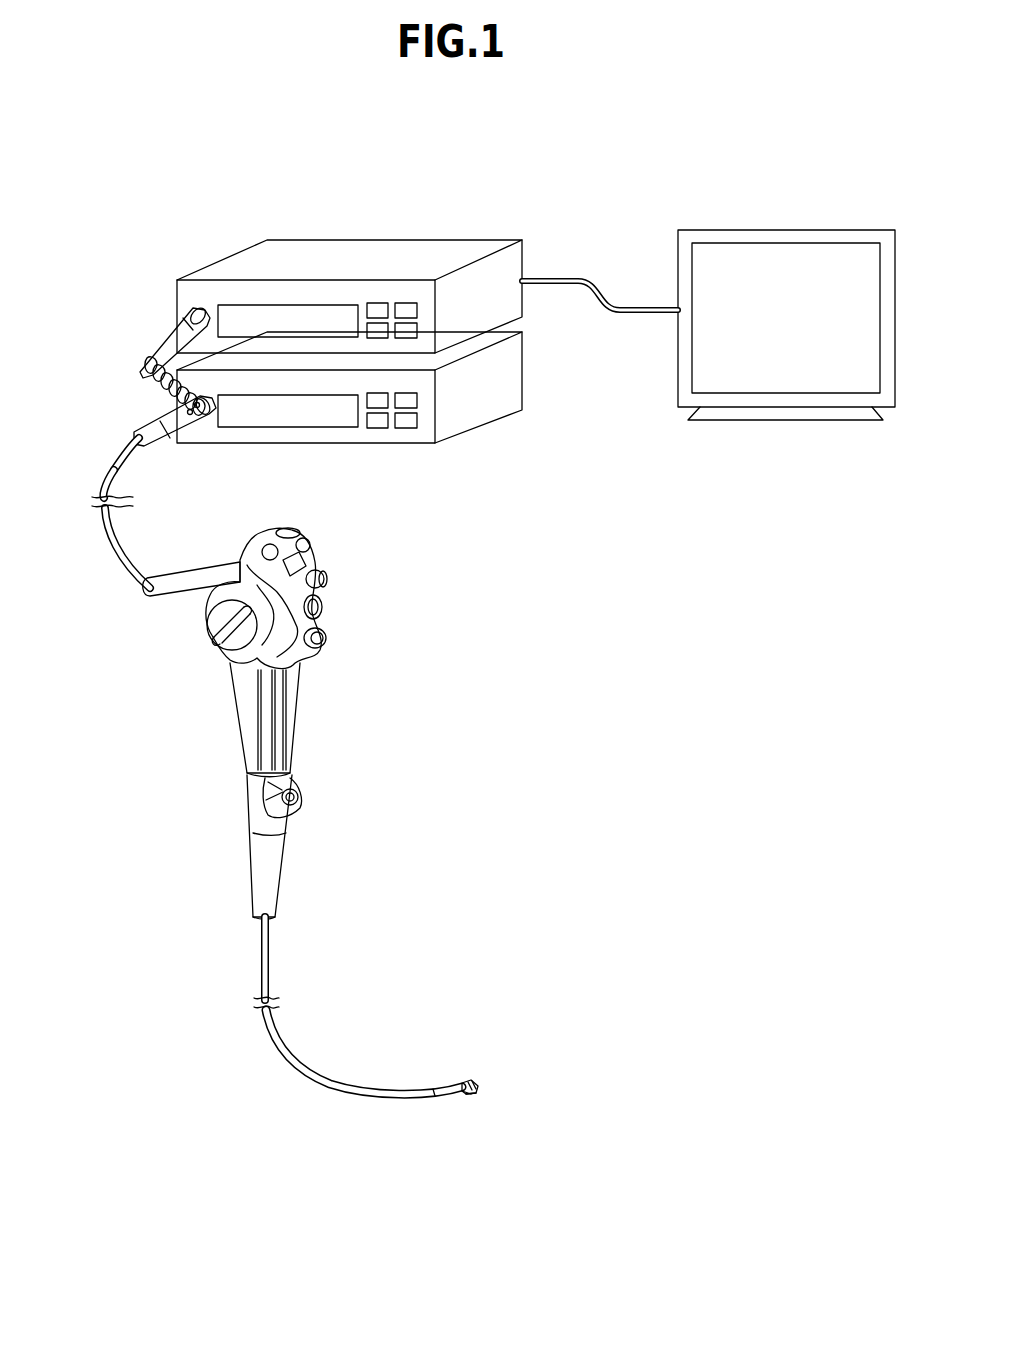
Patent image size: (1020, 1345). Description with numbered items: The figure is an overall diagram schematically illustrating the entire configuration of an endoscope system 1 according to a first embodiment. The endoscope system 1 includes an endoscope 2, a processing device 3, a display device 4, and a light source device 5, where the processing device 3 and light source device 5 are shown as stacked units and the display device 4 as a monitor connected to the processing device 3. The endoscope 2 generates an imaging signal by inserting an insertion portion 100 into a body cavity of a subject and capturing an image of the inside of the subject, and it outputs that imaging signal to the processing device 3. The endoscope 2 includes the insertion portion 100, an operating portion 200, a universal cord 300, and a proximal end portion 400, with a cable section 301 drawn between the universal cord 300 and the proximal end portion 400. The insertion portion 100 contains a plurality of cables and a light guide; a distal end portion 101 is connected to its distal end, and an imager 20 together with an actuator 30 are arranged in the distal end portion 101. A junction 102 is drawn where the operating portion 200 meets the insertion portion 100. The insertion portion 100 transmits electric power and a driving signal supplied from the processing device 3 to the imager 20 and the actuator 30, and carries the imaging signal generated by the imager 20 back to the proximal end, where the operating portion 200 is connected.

The endoscope system 1 is at (830, 153).
The endoscope 2 is at (414, 667).
The processing device 3 is at (490, 247).
The display device 4 is at (788, 238).
The light source device 5 is at (510, 370).
The imager 20 is at (470, 1096).
The actuator 30 is at (470, 1096).
The insertion portion 100 is at (312, 1078).
The distal end portion 101 is at (478, 1077).
The bend preventing portion 102 is at (282, 916).
The operating portion 200 is at (320, 620).
The universal cord 300 is at (108, 533).
The connector cable 301 is at (142, 443).
The proximal end portion 400 is at (167, 403).